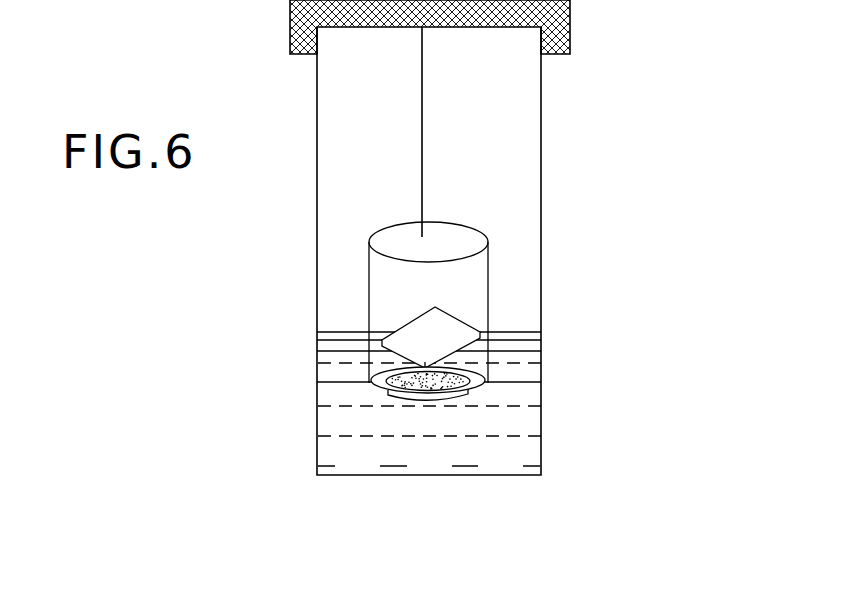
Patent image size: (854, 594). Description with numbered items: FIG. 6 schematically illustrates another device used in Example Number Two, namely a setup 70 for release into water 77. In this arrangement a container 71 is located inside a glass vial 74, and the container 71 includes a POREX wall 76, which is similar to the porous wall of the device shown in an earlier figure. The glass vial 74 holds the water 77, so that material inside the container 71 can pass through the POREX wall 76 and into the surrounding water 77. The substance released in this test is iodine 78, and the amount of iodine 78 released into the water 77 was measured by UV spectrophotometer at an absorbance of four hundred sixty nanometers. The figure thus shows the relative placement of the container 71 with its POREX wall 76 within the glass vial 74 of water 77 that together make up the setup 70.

The setup 70 is at (552, 118).
The container 71 is at (365, 272).
The glass vial 74 is at (541, 228).
The POREX wall 76 is at (405, 400).
The water 77 is at (485, 422).
The iodine 78 is at (453, 327).